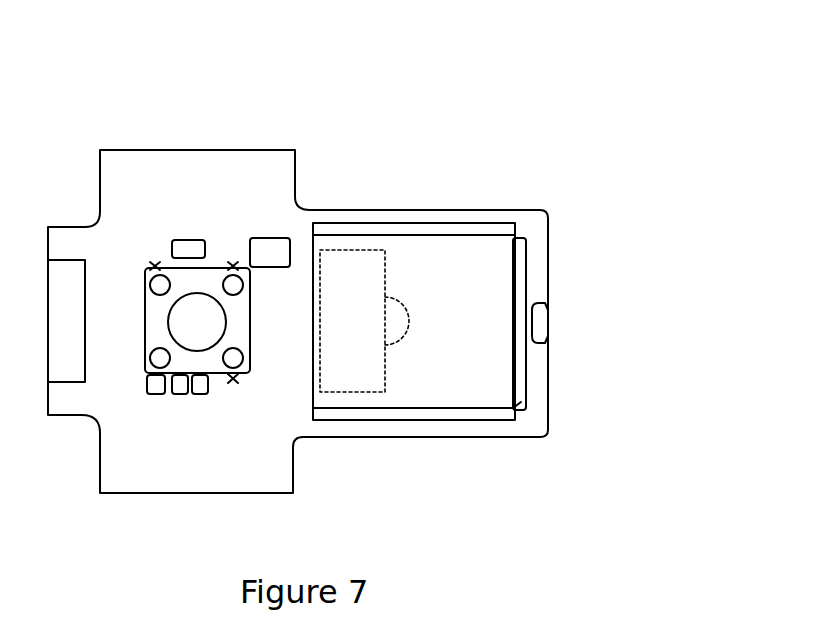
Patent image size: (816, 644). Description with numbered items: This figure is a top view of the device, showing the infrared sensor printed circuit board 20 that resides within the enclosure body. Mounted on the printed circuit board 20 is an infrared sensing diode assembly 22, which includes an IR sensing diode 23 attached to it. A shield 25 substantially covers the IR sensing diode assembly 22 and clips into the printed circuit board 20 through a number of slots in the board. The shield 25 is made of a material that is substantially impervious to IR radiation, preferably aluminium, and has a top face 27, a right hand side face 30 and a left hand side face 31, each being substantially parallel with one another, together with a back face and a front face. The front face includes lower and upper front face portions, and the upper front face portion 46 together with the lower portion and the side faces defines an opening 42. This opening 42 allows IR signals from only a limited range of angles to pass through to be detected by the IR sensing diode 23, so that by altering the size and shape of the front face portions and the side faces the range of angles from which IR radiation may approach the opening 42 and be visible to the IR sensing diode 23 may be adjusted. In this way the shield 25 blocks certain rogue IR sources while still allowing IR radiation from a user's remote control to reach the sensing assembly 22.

The infrared sensor printed circuit board 20 is at (273, 180).
The infrared sensing diode assembly 22 is at (315, 335).
The IR sensing diode 23 is at (403, 322).
The shield 25 is at (398, 220).
The top face 27 is at (460, 298).
The right hand side face 30 is at (452, 220).
The left hand side face 31 is at (450, 417).
The opening 42 is at (522, 283).
The upper front face portion 46 is at (525, 378).